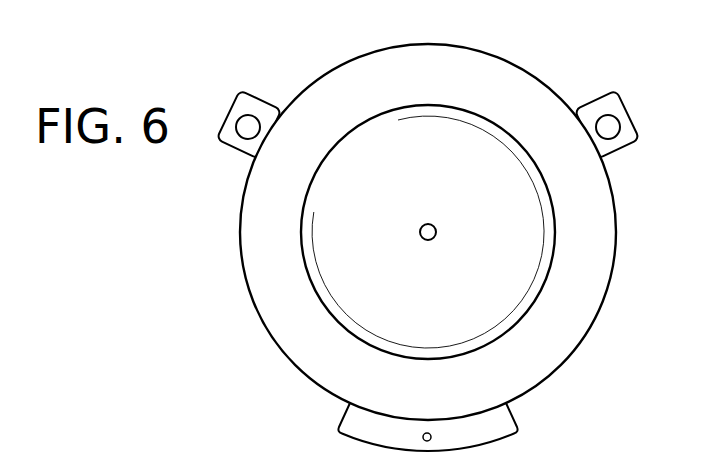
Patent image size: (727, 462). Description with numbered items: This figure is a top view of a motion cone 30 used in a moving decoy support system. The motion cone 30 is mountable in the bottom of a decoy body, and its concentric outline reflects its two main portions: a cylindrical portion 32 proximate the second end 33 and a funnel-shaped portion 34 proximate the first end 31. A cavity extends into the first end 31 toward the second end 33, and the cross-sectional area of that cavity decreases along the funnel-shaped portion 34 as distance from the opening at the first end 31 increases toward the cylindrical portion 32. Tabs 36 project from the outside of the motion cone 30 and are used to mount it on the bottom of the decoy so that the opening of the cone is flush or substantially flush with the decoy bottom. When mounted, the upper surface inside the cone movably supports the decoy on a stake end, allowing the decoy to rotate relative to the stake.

The motion cone 30 is at (565, 51).
The first end 31 is at (270, 327).
The cylindrical portion 32 is at (553, 231).
The second end 33 is at (310, 275).
The funnel-shaped portion 34 is at (595, 320).
The tabs 36 is at (337, 430).